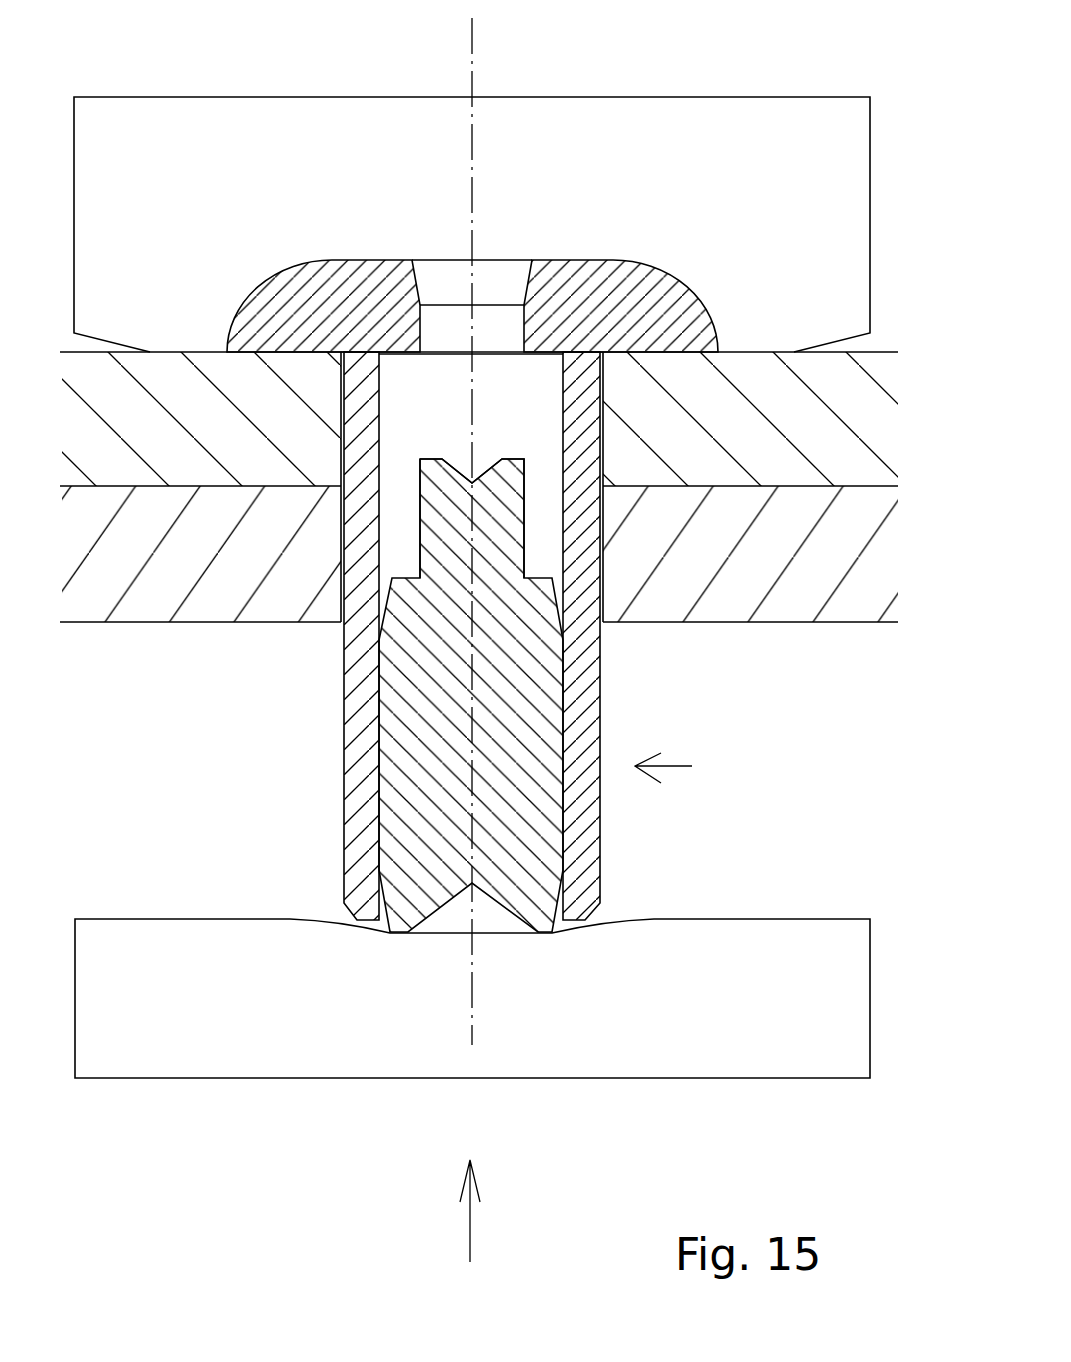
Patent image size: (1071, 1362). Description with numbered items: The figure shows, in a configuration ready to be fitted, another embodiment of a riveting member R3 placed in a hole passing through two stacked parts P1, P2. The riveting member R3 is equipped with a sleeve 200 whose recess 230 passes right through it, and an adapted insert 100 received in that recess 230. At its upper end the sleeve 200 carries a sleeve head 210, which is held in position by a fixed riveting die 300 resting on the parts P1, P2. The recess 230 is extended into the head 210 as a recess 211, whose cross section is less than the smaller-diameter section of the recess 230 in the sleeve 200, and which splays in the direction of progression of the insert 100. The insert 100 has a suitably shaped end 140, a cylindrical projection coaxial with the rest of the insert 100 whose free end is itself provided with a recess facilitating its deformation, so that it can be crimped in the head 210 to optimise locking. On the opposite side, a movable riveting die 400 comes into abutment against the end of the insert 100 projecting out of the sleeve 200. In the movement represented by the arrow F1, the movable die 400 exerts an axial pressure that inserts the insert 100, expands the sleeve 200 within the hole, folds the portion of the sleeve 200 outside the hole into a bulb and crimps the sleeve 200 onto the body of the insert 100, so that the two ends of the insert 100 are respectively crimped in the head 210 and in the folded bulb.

The insert 100 is at (537, 817).
The end of the insert 140 is at (434, 498).
The sleeve 200 is at (372, 718).
The sleeve head 210 is at (571, 279).
The recess formed in the head 211 is at (483, 268).
The recess 230 is at (442, 383).
The fixed riveting die 300 is at (772, 120).
The movable riveting die 400 is at (752, 1058).
The part P1 is at (858, 390).
The part P2 is at (803, 608).
The riveting member R3 is at (697, 764).
The arrow F1 is at (513, 1211).